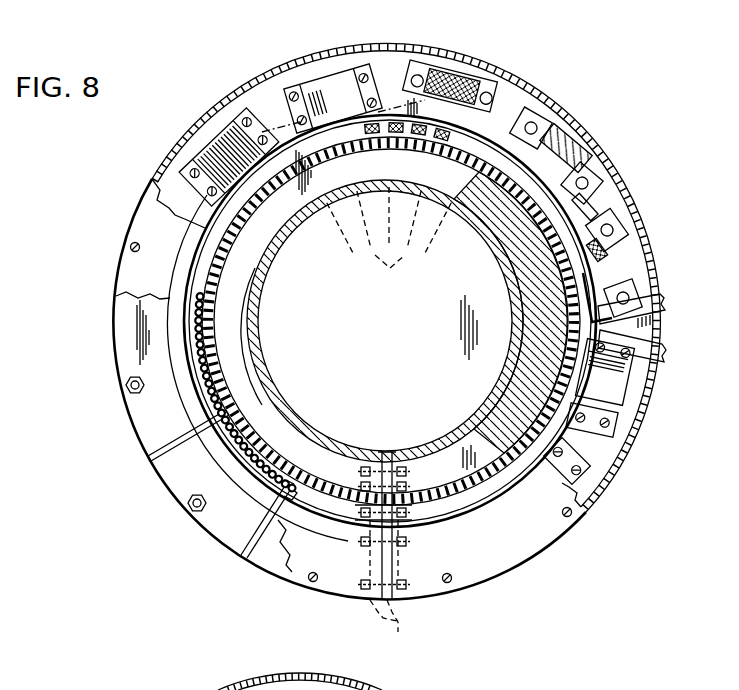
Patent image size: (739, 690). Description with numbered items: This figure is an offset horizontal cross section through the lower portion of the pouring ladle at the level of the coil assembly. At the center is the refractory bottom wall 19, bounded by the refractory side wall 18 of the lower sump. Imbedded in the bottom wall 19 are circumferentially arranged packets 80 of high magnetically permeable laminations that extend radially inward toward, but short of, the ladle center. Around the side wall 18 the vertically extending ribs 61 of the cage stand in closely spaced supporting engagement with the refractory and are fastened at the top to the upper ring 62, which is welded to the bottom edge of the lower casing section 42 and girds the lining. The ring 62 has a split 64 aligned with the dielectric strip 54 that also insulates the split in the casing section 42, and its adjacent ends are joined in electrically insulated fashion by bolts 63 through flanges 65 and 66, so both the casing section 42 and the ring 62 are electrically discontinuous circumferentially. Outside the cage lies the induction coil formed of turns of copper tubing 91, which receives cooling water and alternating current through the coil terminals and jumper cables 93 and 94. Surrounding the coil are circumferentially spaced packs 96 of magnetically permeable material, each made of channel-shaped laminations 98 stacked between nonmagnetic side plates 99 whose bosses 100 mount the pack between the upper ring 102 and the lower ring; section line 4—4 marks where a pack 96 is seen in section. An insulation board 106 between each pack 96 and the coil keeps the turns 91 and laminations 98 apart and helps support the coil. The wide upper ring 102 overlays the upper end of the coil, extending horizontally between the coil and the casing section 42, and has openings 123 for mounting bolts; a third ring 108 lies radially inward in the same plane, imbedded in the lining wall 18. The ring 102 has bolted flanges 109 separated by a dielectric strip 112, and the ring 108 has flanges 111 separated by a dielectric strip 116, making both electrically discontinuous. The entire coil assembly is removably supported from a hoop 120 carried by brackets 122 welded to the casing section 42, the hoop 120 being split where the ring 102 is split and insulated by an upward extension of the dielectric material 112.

The section line 4- 4 is at (397, 103).
The refractory side wall 18 is at (506, 396).
The refractory bottom wall 19 is at (432, 337).
The lower casing section 42 is at (242, 517).
The dielectric strip 54 is at (402, 554).
The rib 61 is at (512, 258).
The upper ring 62 is at (492, 482).
The bolts 63 is at (414, 517).
The split 64 is at (370, 545).
The flange 65 is at (372, 520).
The flange 66 is at (400, 522).
The packets 80 is at (393, 270).
The copper tubing 91 is at (571, 222).
The jumper cable 93 is at (715, 300).
The jumper cable 94 is at (700, 338).
The packs 96 is at (618, 428).
The laminations 98 is at (570, 153).
The side plates 99 is at (550, 131).
The bosses 100 is at (540, 126).
The upper ring 102 is at (132, 272).
The insulation board 106 is at (462, 90).
The third ring 108 is at (250, 372).
The bolted flanges 109 is at (398, 626).
The bolted flanges 111 is at (384, 453).
The dielectric strip 112 is at (397, 576).
The dielectric strip 116 is at (407, 455).
The hoop 120 is at (152, 418).
The brackets 122 is at (163, 468).
The openings 123 is at (133, 244).